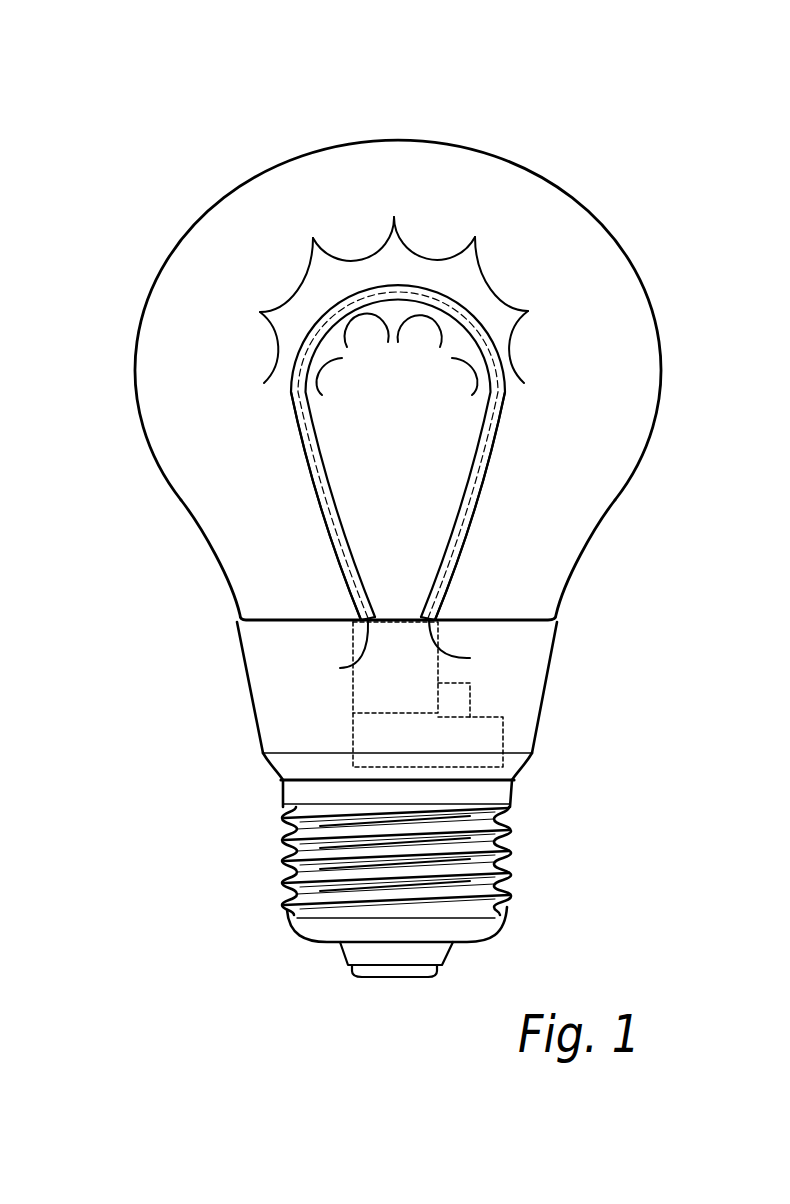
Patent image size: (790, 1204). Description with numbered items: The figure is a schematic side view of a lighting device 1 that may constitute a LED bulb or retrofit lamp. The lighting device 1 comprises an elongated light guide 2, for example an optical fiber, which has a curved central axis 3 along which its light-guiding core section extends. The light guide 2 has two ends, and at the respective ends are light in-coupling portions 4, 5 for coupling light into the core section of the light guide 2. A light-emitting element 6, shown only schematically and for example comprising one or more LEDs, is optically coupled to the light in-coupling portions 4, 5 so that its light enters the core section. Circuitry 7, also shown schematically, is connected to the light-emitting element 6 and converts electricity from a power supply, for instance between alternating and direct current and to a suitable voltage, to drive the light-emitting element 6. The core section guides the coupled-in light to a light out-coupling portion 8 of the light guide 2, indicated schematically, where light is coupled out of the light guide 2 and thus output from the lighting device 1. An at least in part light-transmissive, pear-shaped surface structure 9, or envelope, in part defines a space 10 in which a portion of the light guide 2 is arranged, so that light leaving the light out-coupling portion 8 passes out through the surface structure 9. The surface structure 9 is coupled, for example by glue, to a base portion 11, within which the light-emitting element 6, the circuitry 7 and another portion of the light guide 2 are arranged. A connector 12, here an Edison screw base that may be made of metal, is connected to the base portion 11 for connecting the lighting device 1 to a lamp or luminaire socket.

The lighting device 1 is at (630, 82).
The light guide 2 is at (483, 497).
The central axis 3 is at (290, 408).
The light in-coupling portion 4 is at (340, 668).
The light in-coupling portion 5 is at (470, 658).
The light-emitting element 6 is at (438, 668).
The circuitry 7 is at (505, 738).
The light out-coupling portion 8 is at (455, 290).
The surface structure 9 is at (155, 477).
The space 10 is at (237, 238).
The base portion 11 is at (253, 715).
The connector 12 is at (283, 856).